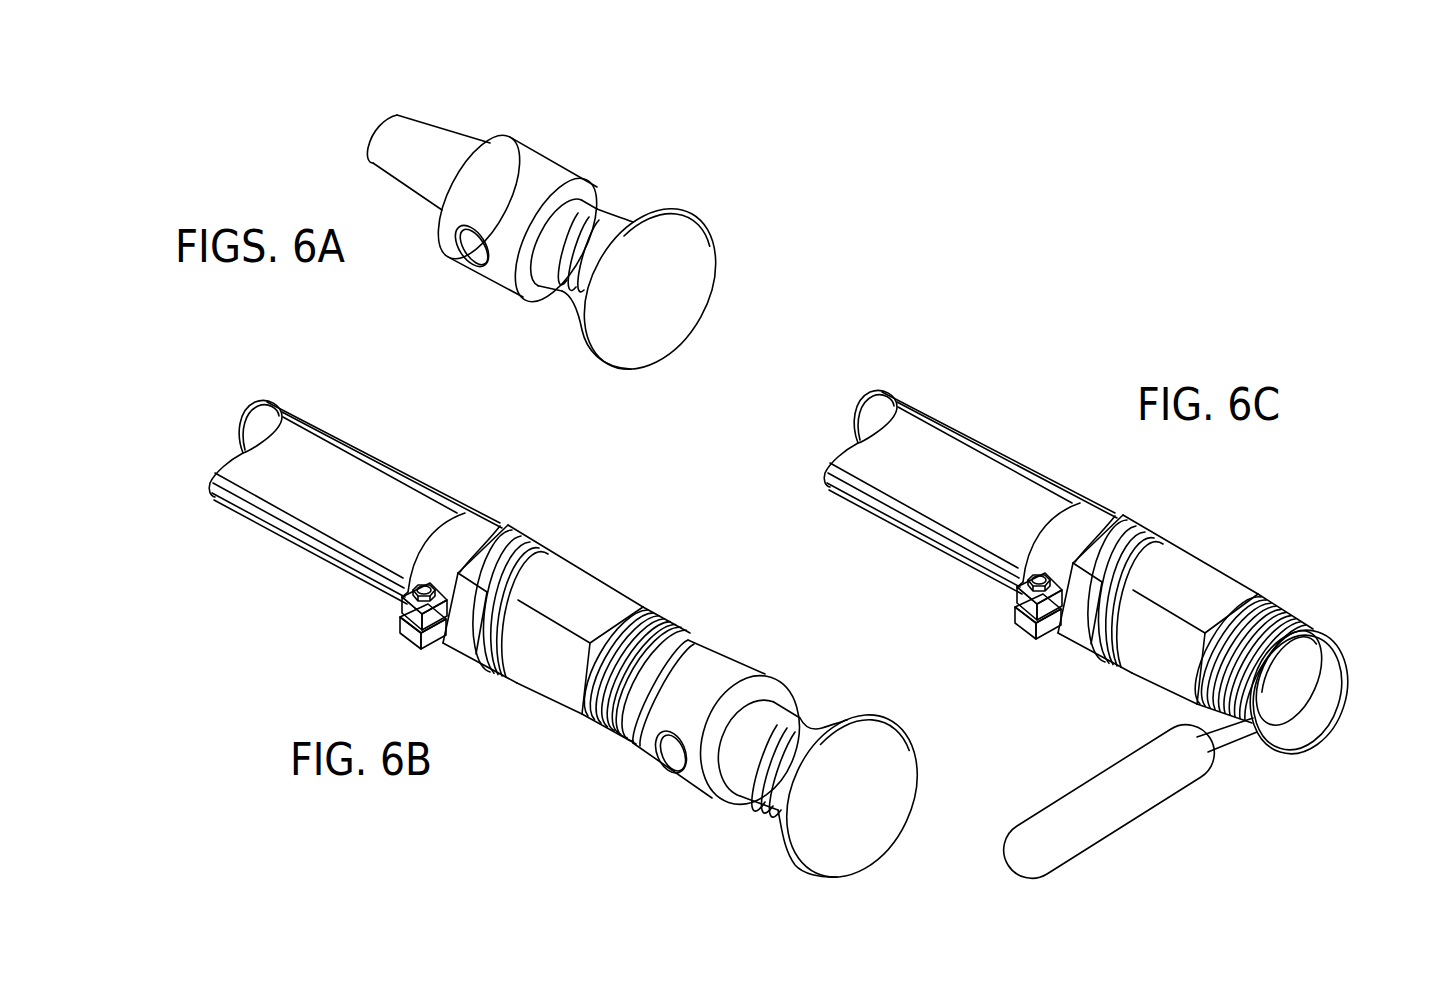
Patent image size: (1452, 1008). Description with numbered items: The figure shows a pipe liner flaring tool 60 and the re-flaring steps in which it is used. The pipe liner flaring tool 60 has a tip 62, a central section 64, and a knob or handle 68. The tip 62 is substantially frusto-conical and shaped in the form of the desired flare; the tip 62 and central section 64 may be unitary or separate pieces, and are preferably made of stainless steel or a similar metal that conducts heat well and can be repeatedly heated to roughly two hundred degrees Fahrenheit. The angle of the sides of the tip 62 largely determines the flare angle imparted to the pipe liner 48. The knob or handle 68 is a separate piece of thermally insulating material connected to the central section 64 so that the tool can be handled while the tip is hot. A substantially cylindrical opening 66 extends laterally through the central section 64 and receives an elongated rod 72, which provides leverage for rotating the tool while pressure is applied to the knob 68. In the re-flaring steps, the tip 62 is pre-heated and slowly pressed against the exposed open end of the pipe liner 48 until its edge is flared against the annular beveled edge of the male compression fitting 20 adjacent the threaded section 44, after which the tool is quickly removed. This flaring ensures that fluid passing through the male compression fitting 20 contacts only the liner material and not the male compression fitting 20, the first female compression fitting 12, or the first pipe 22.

In FIG. 6B, the first female compression fitting 12 is at (524, 538).
In FIG. 6C, the first female compression fitting 12 is at (1140, 527).
In FIG. 6B, the male compression fitting 20 is at (593, 582).
In FIG. 6C, the male compression fitting 20 is at (1223, 582).
In FIG. 6B, the first pipe 22 is at (472, 528).
In FIG. 6C, the first pipe 22 is at (955, 460).
In FIG. 6B, the threaded section 44 is at (650, 610).
In FIG. 6C, the threaded section 44 is at (1280, 608).
In FIG. 6C, the pipe liner 48 is at (1347, 643).
In FIG. 6A, the pipe liner flaring tool 60 is at (557, 130).
In FIG. 6A, the tip 62 is at (427, 137).
In FIG. 6A, the central section 64 is at (490, 270).
In FIG. 6B, the central section 64 is at (724, 729).
In FIG. 6A, the cylindrical opening 66 is at (473, 250).
In FIG. 6B, the cylindrical opening 66 is at (671, 751).
In FIG. 6A, the knob or handle 68 is at (700, 250).
In FIG. 6B, the knob or handle 68 is at (852, 796).
In FIG. 6C, the handle lever 72 is at (1083, 792).